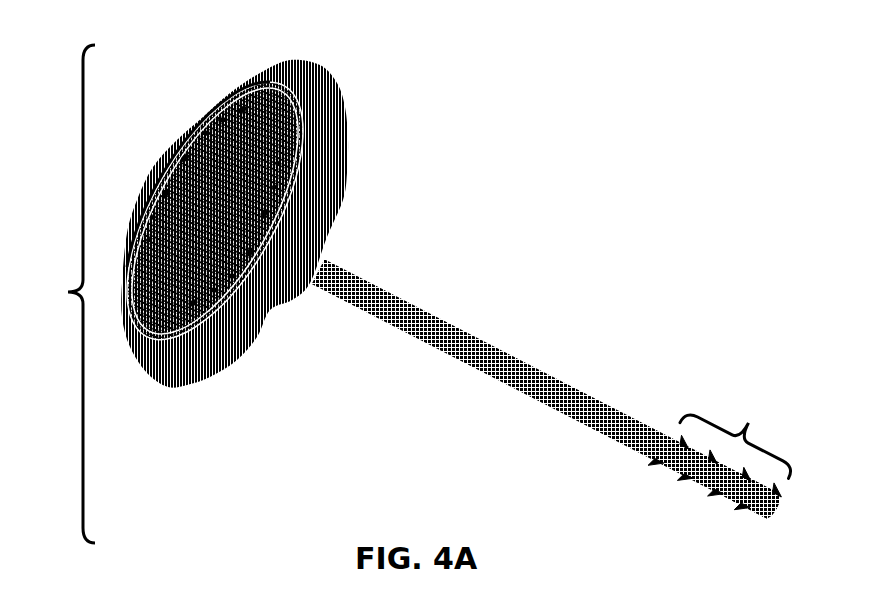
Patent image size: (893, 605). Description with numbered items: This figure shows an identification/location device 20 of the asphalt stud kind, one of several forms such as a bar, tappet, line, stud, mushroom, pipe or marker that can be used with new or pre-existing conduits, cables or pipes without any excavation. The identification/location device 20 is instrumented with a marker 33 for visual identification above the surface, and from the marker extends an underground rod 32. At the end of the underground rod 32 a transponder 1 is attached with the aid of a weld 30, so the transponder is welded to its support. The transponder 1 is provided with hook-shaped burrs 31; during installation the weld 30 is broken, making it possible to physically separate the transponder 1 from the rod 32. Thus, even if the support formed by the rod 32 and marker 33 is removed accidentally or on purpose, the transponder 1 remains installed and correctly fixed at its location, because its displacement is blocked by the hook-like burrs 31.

The identification/location device 20 is at (62, 294).
The marker 33 is at (325, 102).
The underground rod 32 is at (413, 320).
The weld 30 is at (663, 447).
The hook-shaped burrs 31 is at (720, 501).
The transponder 1 is at (735, 431).